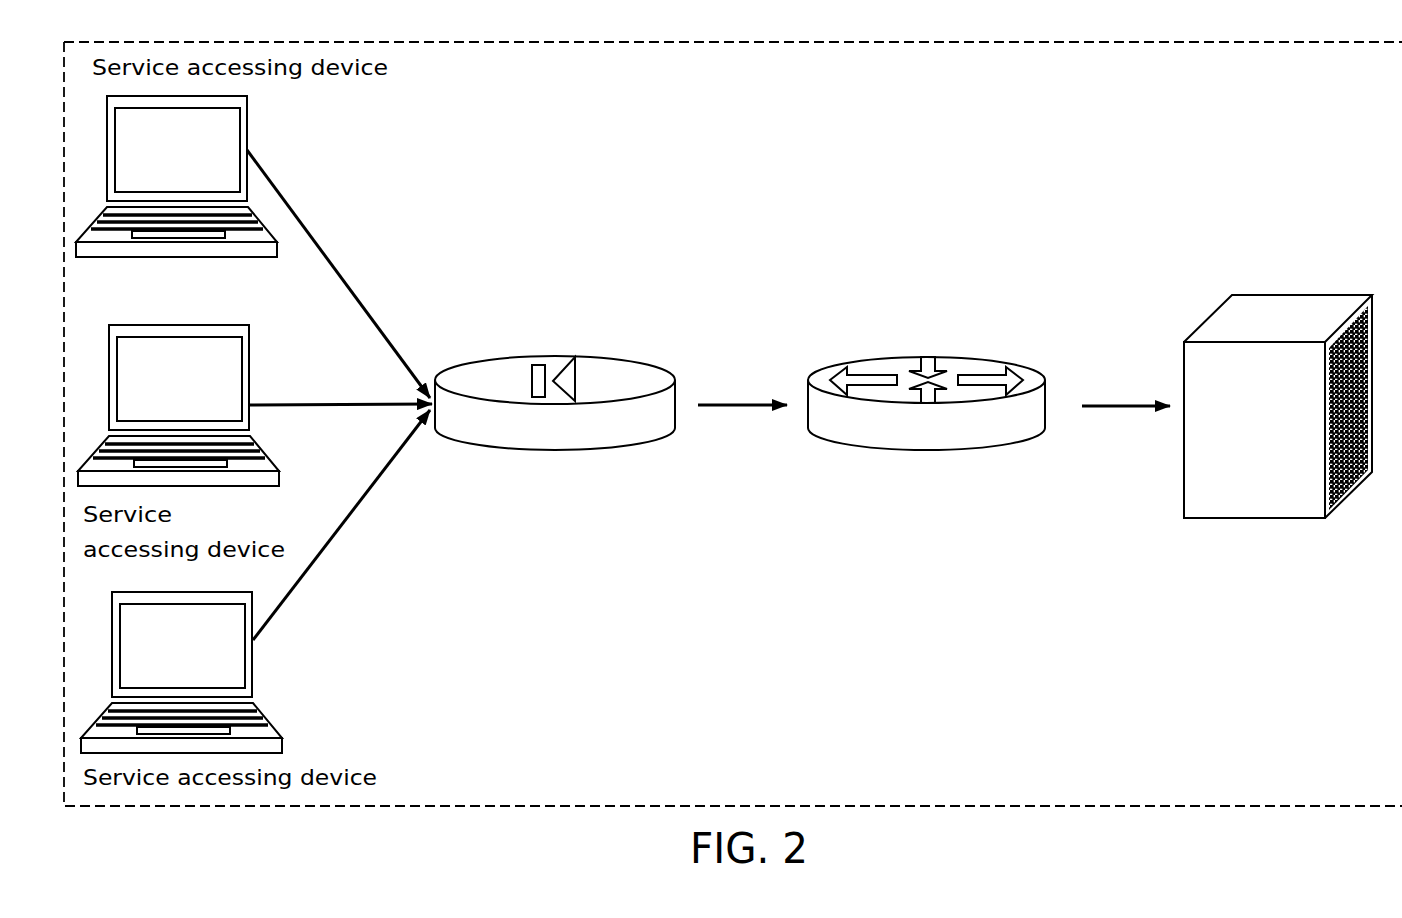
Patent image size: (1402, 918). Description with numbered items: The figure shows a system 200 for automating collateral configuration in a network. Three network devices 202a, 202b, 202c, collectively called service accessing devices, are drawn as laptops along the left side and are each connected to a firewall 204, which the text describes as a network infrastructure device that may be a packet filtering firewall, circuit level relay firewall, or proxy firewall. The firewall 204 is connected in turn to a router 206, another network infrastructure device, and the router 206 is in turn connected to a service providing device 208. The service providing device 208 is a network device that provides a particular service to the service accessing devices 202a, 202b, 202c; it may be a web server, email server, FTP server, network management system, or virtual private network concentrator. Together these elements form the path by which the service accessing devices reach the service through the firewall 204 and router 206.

The system 200 is at (191, 820).
The network device 202a is at (247, 139).
The network device 202b is at (143, 325).
The network device 202c is at (253, 673).
The firewall 204 is at (560, 450).
The router 206 is at (918, 452).
The service providing device 208 is at (1251, 518).